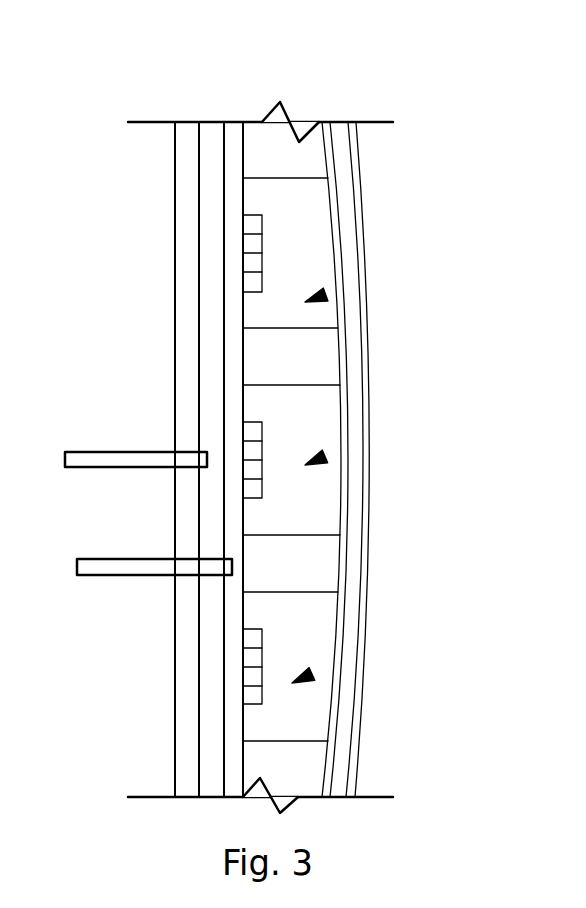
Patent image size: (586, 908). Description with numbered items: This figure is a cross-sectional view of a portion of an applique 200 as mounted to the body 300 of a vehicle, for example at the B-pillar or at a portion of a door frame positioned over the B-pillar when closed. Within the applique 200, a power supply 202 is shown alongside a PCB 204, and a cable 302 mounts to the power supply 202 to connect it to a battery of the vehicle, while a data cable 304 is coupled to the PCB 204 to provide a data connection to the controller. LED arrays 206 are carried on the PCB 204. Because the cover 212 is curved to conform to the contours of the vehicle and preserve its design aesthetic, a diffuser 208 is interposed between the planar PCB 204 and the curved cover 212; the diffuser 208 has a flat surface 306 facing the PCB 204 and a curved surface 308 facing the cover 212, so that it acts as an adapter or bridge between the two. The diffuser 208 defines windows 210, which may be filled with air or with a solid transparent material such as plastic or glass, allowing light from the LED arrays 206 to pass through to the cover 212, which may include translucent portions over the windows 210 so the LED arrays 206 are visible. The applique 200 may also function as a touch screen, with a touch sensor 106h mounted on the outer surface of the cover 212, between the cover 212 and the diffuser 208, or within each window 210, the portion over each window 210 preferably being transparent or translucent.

The applique 200 is at (425, 169).
The power supply 202 is at (207, 130).
The PCB 204 is at (235, 130).
The LED arrays 206 is at (262, 253).
The diffuser 208 is at (270, 353).
The windows 210 is at (318, 297).
The cover 212 is at (369, 362).
The body 300 is at (190, 142).
The cable 302 is at (113, 452).
The data cable 304 is at (95, 559).
The flat surface 306 is at (240, 364).
The curved surface 308 is at (340, 367).
The touch sensor 106h is at (337, 260).